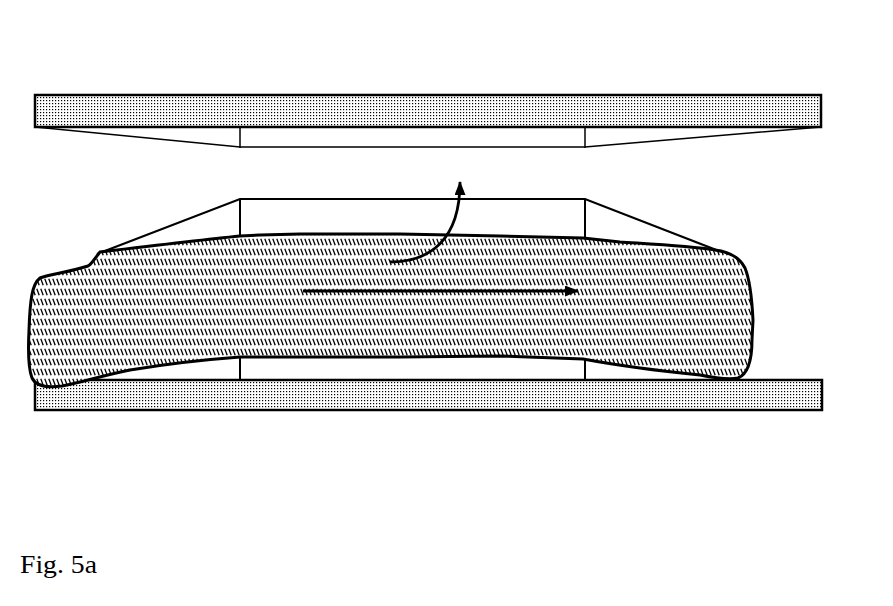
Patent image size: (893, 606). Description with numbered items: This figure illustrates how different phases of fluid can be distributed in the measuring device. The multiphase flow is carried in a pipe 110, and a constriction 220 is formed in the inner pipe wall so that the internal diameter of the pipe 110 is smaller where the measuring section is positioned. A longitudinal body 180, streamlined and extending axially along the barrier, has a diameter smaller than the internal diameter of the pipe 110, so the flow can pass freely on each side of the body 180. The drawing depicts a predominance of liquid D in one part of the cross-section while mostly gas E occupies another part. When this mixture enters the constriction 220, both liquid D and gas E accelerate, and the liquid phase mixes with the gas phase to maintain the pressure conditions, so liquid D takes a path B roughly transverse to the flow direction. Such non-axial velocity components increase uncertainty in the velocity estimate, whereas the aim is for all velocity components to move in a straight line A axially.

The pipe 110 is at (144, 92).
The constriction 220 is at (292, 142).
The longitudinal body 180 is at (532, 195).
The liquid D is at (71, 361).
The straight line axial flow direction A is at (372, 296).
The transverse path B is at (452, 232).
The gas E is at (78, 157).